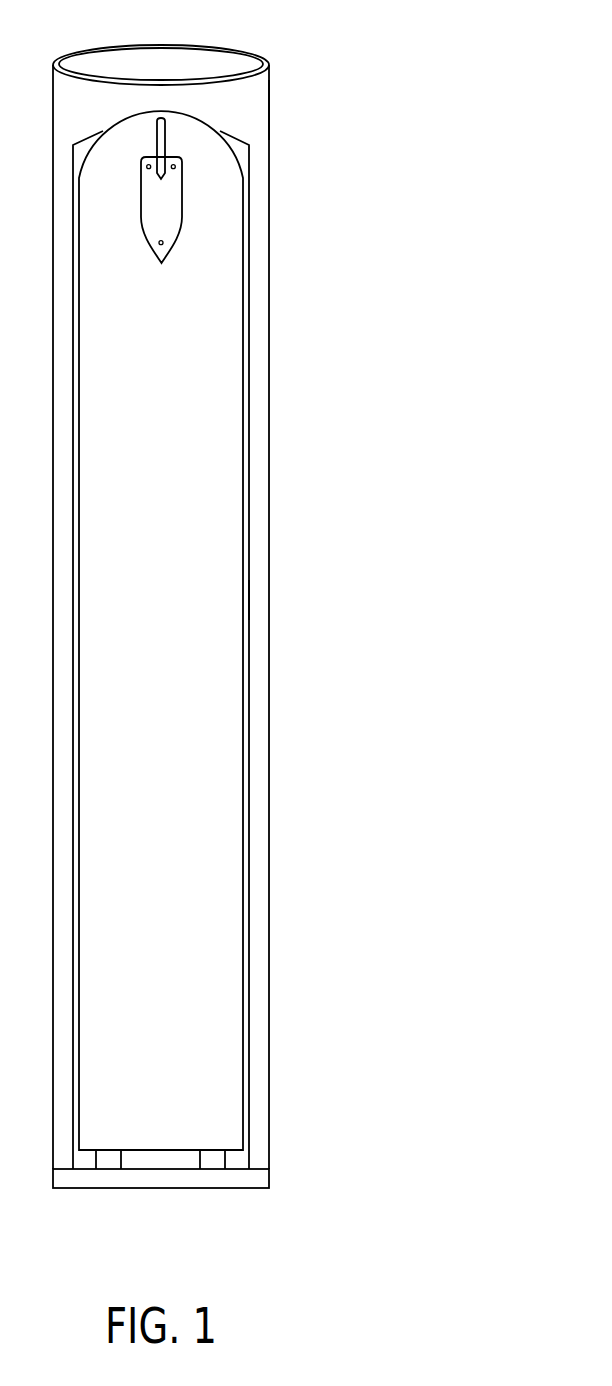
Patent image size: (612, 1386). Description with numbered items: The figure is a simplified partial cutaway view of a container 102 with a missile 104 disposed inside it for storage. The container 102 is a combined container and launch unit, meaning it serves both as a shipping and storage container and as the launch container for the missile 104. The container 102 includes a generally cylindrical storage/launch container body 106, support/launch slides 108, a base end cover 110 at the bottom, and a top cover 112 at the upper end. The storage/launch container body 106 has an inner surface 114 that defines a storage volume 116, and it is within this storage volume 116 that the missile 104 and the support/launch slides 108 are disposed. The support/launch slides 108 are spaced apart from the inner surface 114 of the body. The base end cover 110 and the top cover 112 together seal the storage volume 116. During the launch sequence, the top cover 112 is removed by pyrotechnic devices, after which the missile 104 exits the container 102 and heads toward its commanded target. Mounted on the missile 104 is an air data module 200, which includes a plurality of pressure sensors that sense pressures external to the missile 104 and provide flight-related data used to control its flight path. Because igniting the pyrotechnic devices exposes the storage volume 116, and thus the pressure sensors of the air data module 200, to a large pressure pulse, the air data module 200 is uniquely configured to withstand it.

The container 102 is at (260, 615).
The missile 104 is at (186, 430).
The storage/launch container body 106 is at (269, 477).
The support/launch slides 108 is at (205, 640).
The base end cover 110 is at (167, 1188).
The top cover 112 is at (166, 63).
The inner surface 114 is at (269, 590).
The storage volume 116 is at (245, 108).
The air data module 200 is at (191, 211).